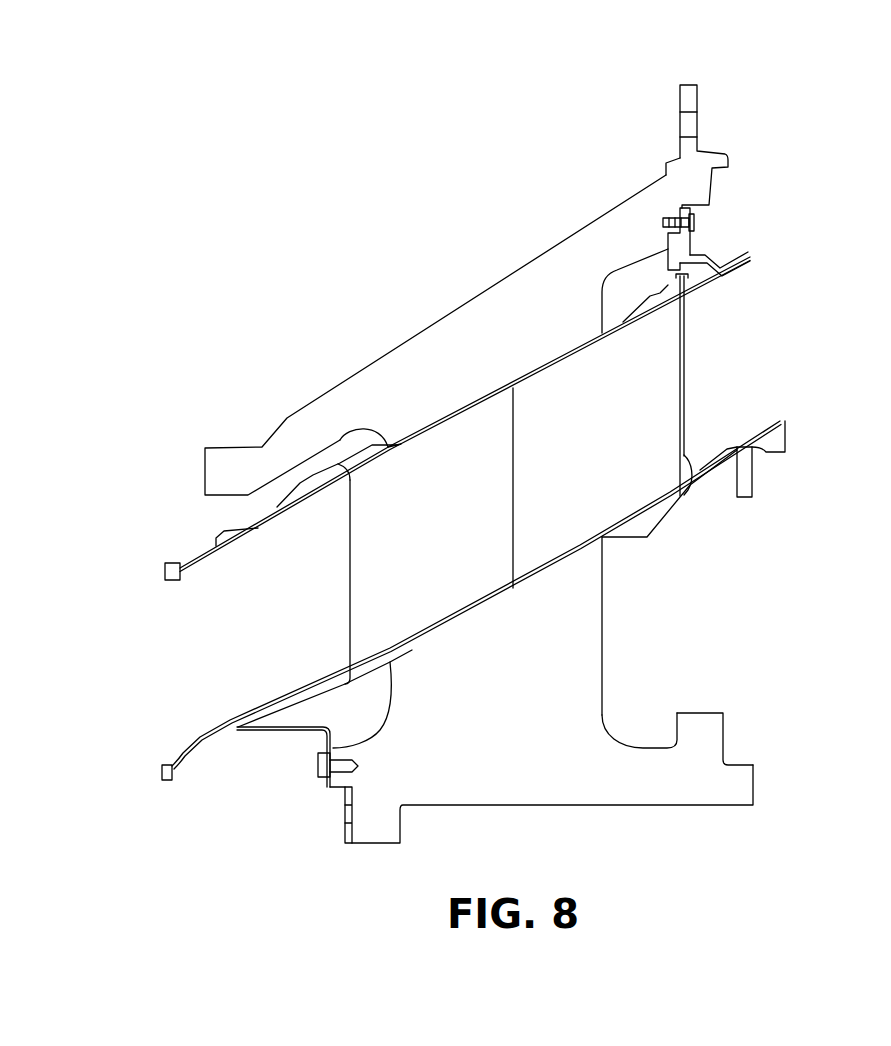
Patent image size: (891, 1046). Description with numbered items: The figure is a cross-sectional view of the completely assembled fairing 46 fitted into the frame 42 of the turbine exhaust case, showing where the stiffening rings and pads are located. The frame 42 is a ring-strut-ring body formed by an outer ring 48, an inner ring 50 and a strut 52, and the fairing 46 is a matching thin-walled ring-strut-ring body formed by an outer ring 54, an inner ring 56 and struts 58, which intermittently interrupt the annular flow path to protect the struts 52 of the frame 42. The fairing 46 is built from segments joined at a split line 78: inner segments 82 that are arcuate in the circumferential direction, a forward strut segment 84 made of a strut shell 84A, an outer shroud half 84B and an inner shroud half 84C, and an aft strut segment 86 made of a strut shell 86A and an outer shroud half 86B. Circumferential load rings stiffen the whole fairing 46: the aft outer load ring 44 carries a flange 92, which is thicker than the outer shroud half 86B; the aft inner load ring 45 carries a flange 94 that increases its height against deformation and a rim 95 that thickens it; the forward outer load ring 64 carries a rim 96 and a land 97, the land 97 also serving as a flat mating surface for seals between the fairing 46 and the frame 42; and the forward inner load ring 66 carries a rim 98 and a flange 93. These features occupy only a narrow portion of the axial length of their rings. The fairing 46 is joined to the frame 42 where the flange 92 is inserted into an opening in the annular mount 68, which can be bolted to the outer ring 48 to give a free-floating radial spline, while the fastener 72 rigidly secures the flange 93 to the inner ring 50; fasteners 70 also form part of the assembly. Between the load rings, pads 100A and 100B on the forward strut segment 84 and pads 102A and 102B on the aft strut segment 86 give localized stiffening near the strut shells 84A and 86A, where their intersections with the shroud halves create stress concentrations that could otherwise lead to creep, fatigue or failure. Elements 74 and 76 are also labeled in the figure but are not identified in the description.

The frame 42 is at (618, 706).
The aft outer load ring 44 is at (735, 255).
The aft inner load ring 45 is at (800, 433).
The fairing 46 is at (491, 392).
The outer ring 48 is at (273, 453).
The inner ring 50 is at (660, 783).
The strut 52 is at (512, 702).
The outer ring 54 is at (298, 516).
The inner ring 56 is at (310, 670).
The struts 58 is at (702, 380).
The forward outer load ring 64 is at (173, 592).
The forward inner load ring 66 is at (168, 792).
The annular mount 68 is at (690, 222).
The fasteners 70 is at (664, 232).
The fastener 72 is at (320, 767).
The tab 74 is at (723, 720).
The flange 76 is at (695, 98).
The split line 78 is at (512, 488).
The inner segments 82 is at (263, 533).
The forward strut segment 84 is at (335, 585).
The strut shell 84A is at (351, 607).
The outer shroud half 84B is at (257, 528).
The inner shroud half 84C is at (253, 717).
The aft strut segment 86 is at (702, 345).
The strut shell 86A is at (688, 320).
The outer shroud half 86B is at (705, 300).
The flange 92 is at (712, 252).
The flange 93 is at (252, 730).
The flange 94 is at (748, 487).
The rim 95 is at (765, 447).
The rim 96 is at (175, 562).
The land 97 is at (227, 543).
The rim 98 is at (161, 773).
The pad 100A is at (318, 487).
The pad 100B is at (322, 690).
The pad 102A is at (658, 296).
The pad 102B is at (656, 508).